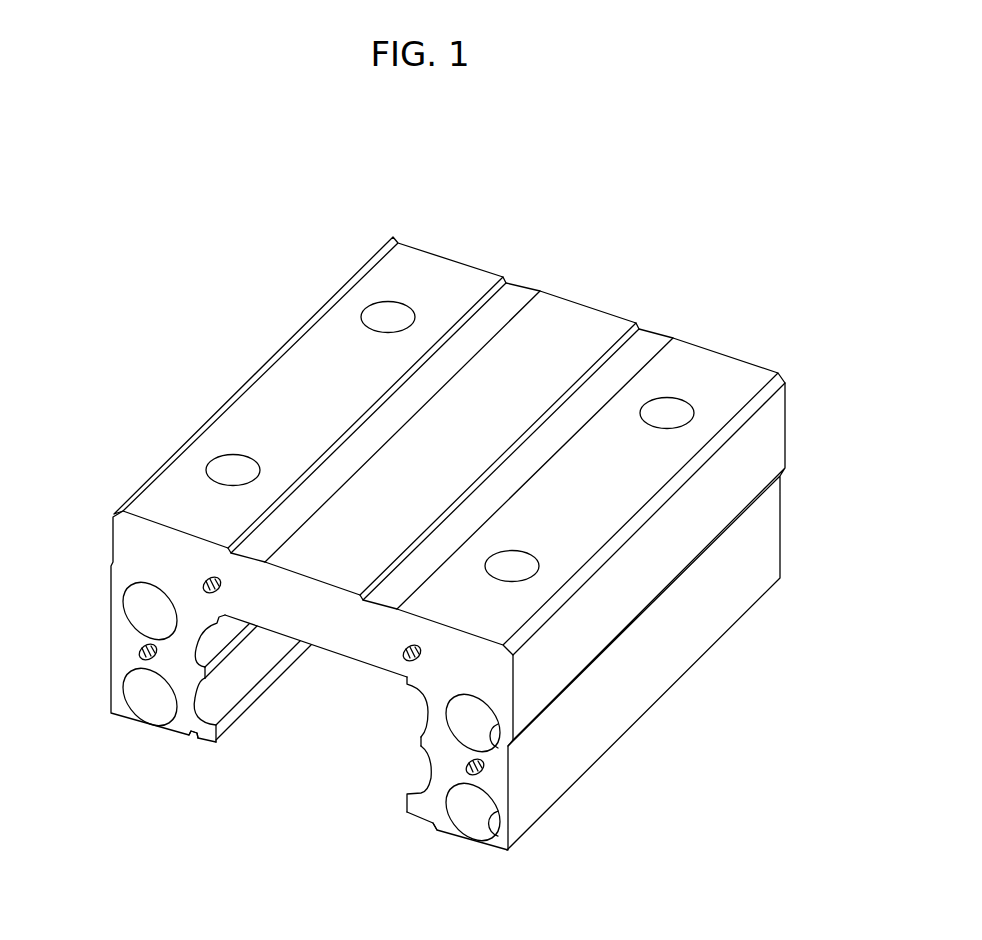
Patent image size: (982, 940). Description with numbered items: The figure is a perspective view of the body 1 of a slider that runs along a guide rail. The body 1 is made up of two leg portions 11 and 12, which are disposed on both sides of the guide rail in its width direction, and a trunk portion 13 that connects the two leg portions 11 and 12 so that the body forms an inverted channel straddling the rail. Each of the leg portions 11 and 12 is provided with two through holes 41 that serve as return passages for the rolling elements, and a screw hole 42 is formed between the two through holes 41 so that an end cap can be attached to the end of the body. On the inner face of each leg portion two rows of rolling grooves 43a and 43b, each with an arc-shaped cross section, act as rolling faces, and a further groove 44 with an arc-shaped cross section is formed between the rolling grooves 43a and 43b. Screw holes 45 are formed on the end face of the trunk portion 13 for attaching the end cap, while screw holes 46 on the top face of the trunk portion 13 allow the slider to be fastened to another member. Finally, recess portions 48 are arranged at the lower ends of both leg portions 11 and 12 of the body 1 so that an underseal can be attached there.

The body 1 is at (537, 246).
The leg portion 11 is at (125, 659).
The leg portion 12 is at (497, 772).
The trunk portion 13 is at (337, 630).
The through hole 41 is at (147, 608).
The screw hole 42 is at (142, 660).
The rolling groove 43a is at (218, 637).
The rolling groove 43b is at (213, 700).
The groove 44 is at (213, 693).
The screw hole 45 is at (203, 587).
The screw hole 46 is at (383, 315).
The recess portion 48 is at (195, 741).